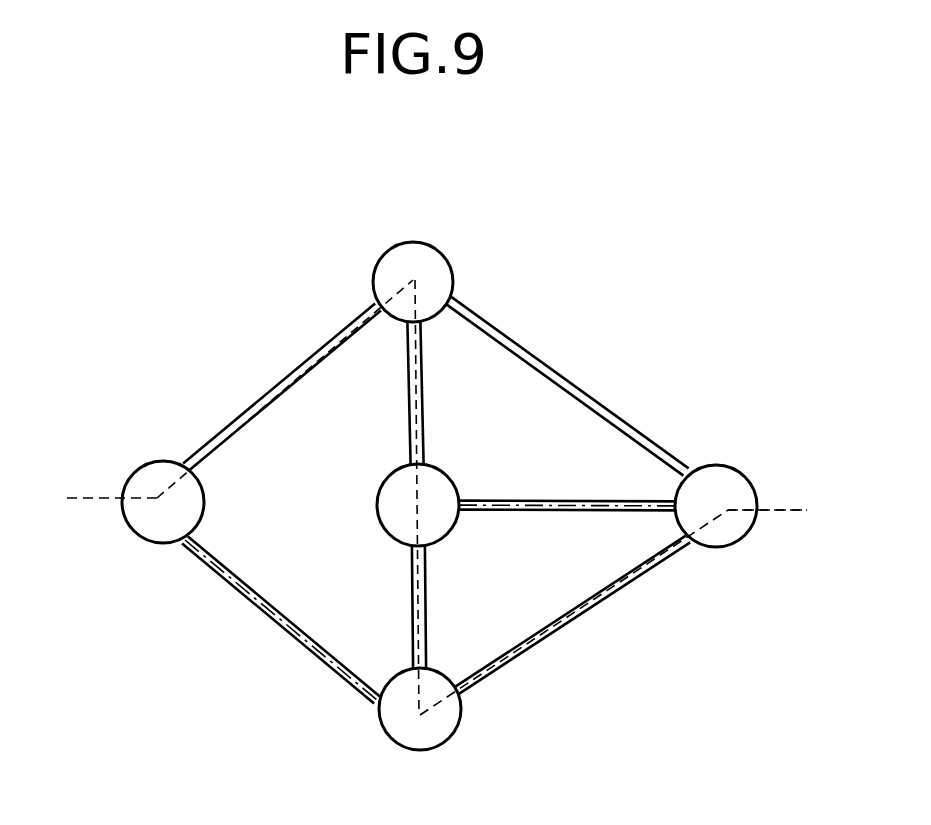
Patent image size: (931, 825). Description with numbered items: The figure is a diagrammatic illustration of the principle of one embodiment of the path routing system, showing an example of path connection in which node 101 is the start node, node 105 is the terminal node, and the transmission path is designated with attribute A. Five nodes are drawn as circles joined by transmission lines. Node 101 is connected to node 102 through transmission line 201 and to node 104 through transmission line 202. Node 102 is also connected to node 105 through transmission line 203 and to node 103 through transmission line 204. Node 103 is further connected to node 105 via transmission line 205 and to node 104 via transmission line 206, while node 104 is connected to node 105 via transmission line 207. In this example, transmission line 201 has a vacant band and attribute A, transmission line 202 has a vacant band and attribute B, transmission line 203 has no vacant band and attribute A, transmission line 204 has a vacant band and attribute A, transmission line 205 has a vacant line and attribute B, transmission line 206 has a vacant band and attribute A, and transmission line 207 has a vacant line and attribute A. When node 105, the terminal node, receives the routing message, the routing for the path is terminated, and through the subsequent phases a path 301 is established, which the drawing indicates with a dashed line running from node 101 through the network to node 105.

The node 101 is at (153, 461).
The node 102 is at (411, 241).
The node 103 is at (377, 500).
The node 104 is at (417, 751).
The node 105 is at (720, 465).
The transmission line 201 is at (262, 398).
The transmission line 202 is at (282, 632).
The transmission line 203 is at (556, 374).
The transmission line 204 is at (437, 403).
The transmission line 205 is at (504, 495).
The transmission line 206 is at (440, 582).
The transmission line 207 is at (589, 614).
The path 301 is at (785, 508).